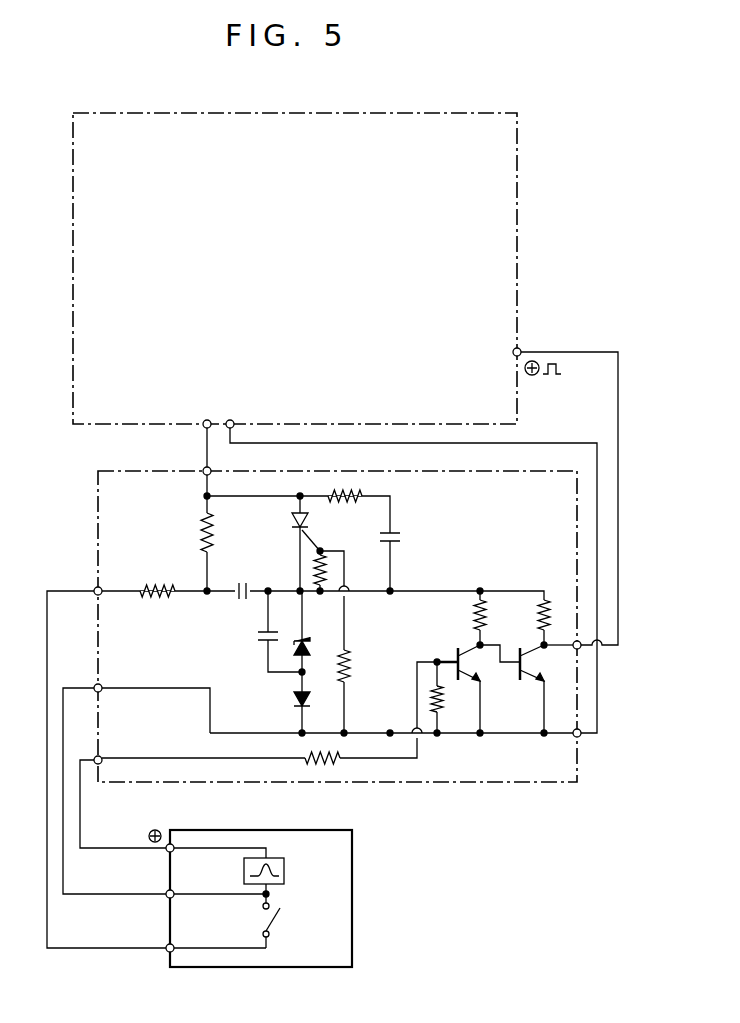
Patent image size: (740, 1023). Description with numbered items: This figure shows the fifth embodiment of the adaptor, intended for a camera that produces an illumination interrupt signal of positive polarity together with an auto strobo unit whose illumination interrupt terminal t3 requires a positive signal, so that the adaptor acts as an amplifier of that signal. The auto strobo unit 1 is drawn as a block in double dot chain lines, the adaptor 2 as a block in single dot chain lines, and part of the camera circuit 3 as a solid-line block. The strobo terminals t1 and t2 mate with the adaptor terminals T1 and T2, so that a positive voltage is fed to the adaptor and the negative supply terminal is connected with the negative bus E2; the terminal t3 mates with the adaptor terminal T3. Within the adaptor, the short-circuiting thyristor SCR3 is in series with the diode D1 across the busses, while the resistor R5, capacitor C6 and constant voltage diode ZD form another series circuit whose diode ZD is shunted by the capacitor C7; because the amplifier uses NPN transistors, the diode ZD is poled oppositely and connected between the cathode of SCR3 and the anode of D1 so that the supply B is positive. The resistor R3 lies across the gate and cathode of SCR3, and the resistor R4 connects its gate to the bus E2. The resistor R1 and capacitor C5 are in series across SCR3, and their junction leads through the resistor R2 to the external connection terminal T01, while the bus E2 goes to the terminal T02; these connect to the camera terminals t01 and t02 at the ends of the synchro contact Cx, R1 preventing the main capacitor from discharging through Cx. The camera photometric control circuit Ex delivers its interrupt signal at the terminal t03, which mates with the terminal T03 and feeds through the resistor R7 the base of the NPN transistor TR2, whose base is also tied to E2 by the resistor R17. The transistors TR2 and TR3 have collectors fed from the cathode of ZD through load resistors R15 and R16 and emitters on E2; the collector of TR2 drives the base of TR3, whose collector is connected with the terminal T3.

The auto strobo unit 1 is at (517, 256).
The adaptor 2 is at (430, 782).
The camera circuit 3 is at (352, 895).
The terminal t1 is at (204, 421).
The terminal t2 is at (231, 420).
The illumination interrupt terminal t3 is at (519, 348).
The terminal T1 is at (203, 470).
The terminal T2 is at (578, 737).
The terminal T3 is at (580, 648).
The external connection terminal T01 is at (95, 588).
The external connection terminal T02 is at (95, 685).
The external connection terminal T03 is at (101, 757).
The terminal t01 is at (167, 952).
The terminal t02 is at (167, 898).
The output terminal t03 is at (167, 852).
The resistor R1 is at (204, 537).
The resistor R2 is at (160, 598).
The resistor R3 is at (328, 572).
The resistor R4 is at (350, 668).
The resistor R5 is at (347, 500).
The resistor R7 is at (304, 755).
The load resistor R15 is at (478, 618).
The load resistor R16 is at (542, 618).
The resistor R17 is at (440, 700).
The capacitor C5 is at (246, 582).
The capacitor C6 is at (402, 540).
The capacitor C7 is at (257, 636).
The short-circuiting thyristor SCR3 is at (296, 518).
The constant voltage diode ZD is at (310, 646).
The diode D1 is at (294, 702).
The supply B is at (282, 611).
The NPN transistor TR2 is at (457, 656).
The NPN transistor TR3 is at (530, 690).
The negative bus E2 is at (498, 733).
The photometric control circuit Ex is at (284, 871).
The synchro contact Cx is at (276, 922).